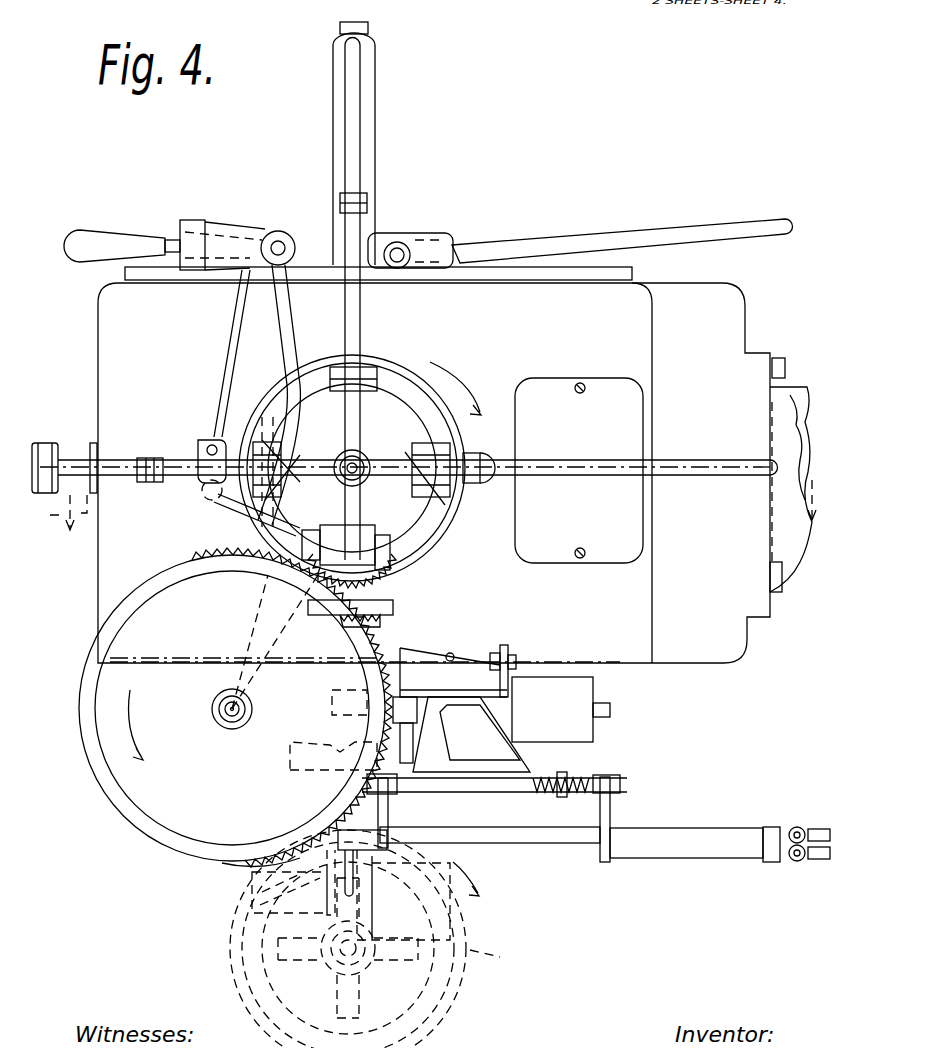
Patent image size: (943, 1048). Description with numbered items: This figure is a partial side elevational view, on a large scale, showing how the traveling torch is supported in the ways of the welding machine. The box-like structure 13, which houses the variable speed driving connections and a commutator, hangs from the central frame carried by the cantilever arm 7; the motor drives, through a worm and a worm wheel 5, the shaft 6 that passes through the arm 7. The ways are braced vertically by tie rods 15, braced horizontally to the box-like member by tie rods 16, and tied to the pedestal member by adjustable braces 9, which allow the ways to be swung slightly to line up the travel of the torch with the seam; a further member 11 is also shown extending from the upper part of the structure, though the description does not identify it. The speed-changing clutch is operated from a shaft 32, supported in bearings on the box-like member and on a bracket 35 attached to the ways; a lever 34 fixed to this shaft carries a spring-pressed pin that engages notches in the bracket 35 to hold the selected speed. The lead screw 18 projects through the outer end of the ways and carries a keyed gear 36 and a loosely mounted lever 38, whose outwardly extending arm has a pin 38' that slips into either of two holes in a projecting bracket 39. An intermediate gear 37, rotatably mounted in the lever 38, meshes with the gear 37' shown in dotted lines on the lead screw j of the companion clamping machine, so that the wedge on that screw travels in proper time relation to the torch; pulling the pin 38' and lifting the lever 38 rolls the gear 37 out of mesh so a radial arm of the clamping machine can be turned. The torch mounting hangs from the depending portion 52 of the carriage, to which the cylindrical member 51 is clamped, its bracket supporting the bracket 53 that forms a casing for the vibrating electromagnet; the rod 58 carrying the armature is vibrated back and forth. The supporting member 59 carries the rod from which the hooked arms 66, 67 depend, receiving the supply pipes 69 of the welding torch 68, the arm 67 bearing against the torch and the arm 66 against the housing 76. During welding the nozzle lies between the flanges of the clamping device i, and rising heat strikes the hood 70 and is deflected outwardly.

The worm wheel 5 is at (431, 508).
The shaft 6 is at (806, 422).
The cantilever arm 7 is at (796, 400).
The braces 9 is at (694, 468).
The lever 11 is at (688, 228).
The box-like structure 13 is at (630, 655).
The tie rods 15 is at (358, 113).
The tie rods 16 is at (74, 440).
The lead screw 18 is at (364, 450).
The shaft 32 is at (281, 240).
The lever 34 is at (100, 240).
The bracket 35 is at (215, 237).
The gear 36 is at (386, 366).
The intermediate gear 37 is at (216, 707).
The gear 37' is at (226, 879).
The lever 38 is at (229, 515).
The pin 38' is at (175, 491).
The bracket 39 is at (198, 452).
The cylindrical member 51 is at (378, 624).
The depending portion 52 is at (395, 592).
The bracket 53 is at (530, 662).
The rod 58 is at (500, 738).
The supporting member 59 is at (472, 722).
The arm 66 is at (612, 802).
The arm 67 is at (392, 803).
The welding torch 68 is at (345, 872).
The supply pipes 69 is at (562, 843).
The hood 70 is at (288, 760).
The housing 76 is at (667, 852).
The clamping device i is at (280, 905).
The lead screw j is at (490, 961).